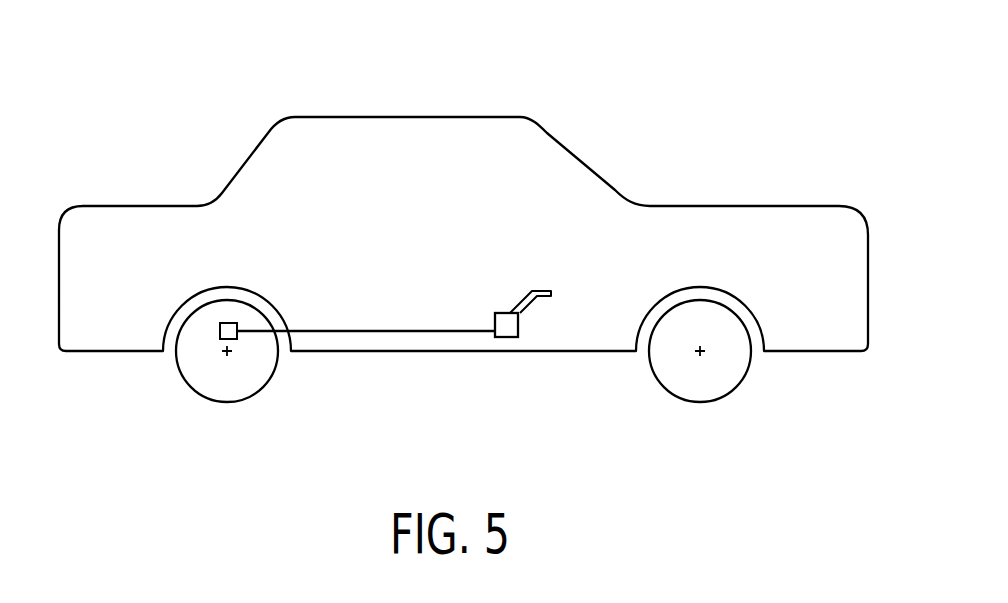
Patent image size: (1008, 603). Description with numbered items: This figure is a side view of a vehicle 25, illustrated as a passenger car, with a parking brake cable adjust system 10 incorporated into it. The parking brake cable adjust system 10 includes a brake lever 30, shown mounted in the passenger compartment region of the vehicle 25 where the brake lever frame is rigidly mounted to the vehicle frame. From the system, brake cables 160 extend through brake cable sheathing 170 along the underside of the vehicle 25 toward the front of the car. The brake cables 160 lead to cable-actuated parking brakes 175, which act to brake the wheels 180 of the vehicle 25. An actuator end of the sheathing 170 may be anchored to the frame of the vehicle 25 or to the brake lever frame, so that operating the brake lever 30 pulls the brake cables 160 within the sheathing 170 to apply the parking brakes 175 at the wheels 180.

The vehicle 25 is at (235, 100).
The parking brake cable adjust system 10 is at (558, 277).
The brake lever 30 is at (530, 290).
The brake cables 160 is at (366, 372).
The brake cable sheathing 170 is at (340, 333).
The cable-actuated parking brakes 175 is at (223, 340).
The wheels 180 is at (218, 318).